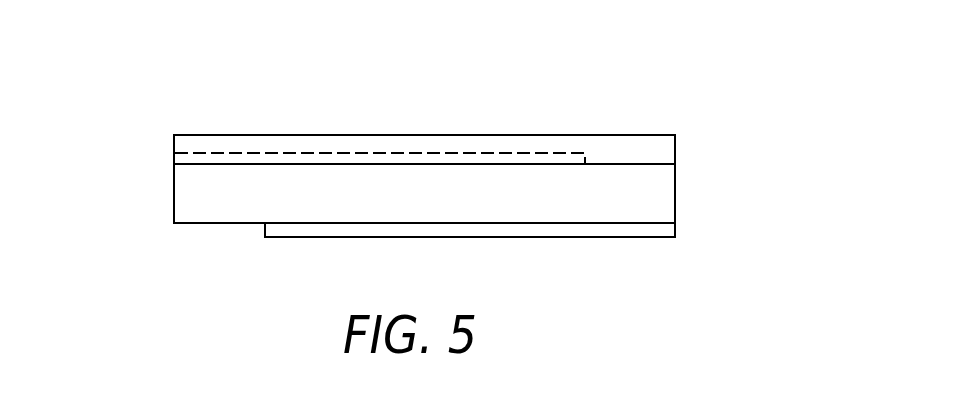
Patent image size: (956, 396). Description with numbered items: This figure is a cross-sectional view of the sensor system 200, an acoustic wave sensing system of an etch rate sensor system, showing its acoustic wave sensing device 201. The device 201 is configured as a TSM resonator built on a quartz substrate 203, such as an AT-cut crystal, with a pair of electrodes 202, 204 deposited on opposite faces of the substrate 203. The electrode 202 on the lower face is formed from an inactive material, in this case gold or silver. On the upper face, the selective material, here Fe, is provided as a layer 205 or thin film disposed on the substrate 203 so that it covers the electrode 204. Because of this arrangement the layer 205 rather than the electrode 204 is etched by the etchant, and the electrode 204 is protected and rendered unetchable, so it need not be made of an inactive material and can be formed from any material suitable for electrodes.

The sensor system 200 is at (643, 92).
The acoustic wave sensing device 201 is at (174, 198).
The electrode 202 is at (580, 238).
The quartz substrate 203 is at (648, 198).
The electrode 204 is at (176, 158).
The layer 205 is at (648, 155).